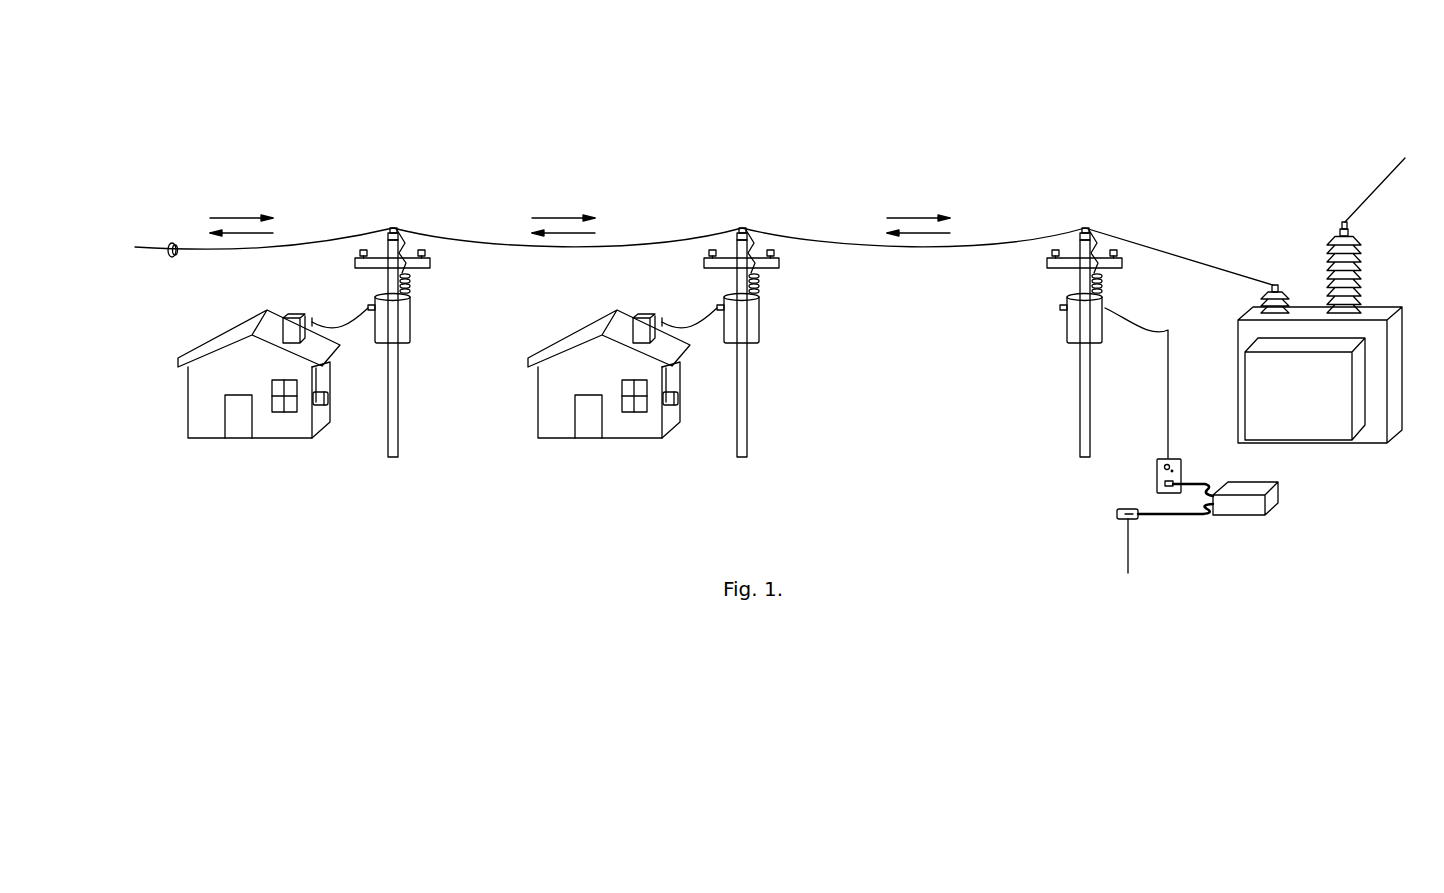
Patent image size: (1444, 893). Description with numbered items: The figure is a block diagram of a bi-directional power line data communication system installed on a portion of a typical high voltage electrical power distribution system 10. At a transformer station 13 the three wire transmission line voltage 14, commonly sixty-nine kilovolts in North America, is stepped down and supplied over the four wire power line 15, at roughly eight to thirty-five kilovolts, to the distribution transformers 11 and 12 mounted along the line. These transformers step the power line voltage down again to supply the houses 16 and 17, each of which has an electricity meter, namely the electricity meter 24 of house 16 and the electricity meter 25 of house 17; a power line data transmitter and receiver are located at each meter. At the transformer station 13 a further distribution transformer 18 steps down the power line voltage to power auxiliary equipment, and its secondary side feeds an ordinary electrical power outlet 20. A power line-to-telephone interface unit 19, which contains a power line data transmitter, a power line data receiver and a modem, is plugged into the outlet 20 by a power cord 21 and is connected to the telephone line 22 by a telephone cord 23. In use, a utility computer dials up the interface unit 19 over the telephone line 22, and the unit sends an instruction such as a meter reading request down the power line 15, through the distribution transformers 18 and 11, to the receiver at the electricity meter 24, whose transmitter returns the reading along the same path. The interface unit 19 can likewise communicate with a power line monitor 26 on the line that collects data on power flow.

The high voltage electrical power distribution system 10 is at (687, 145).
The distribution transformer 11 is at (761, 312).
The distribution transformer 12 is at (412, 312).
The transformer station 13 is at (1208, 133).
The three wire transmission line voltage 14 is at (1375, 172).
The four wire power line 15 is at (1033, 232).
The house 16 is at (567, 443).
The house 17 is at (217, 443).
The distribution transformer 18 is at (1060, 320).
The power line-to-telephone interface unit 19 is at (1257, 523).
The electrical power outlet 20 is at (1183, 463).
The power cord 21 is at (1228, 435).
The telephone line 22 is at (1100, 541).
The telephone cord 23 is at (1165, 523).
The electricity meter 24 is at (680, 398).
The electricity meter 25 is at (330, 398).
The power line monitor 26 is at (175, 242).